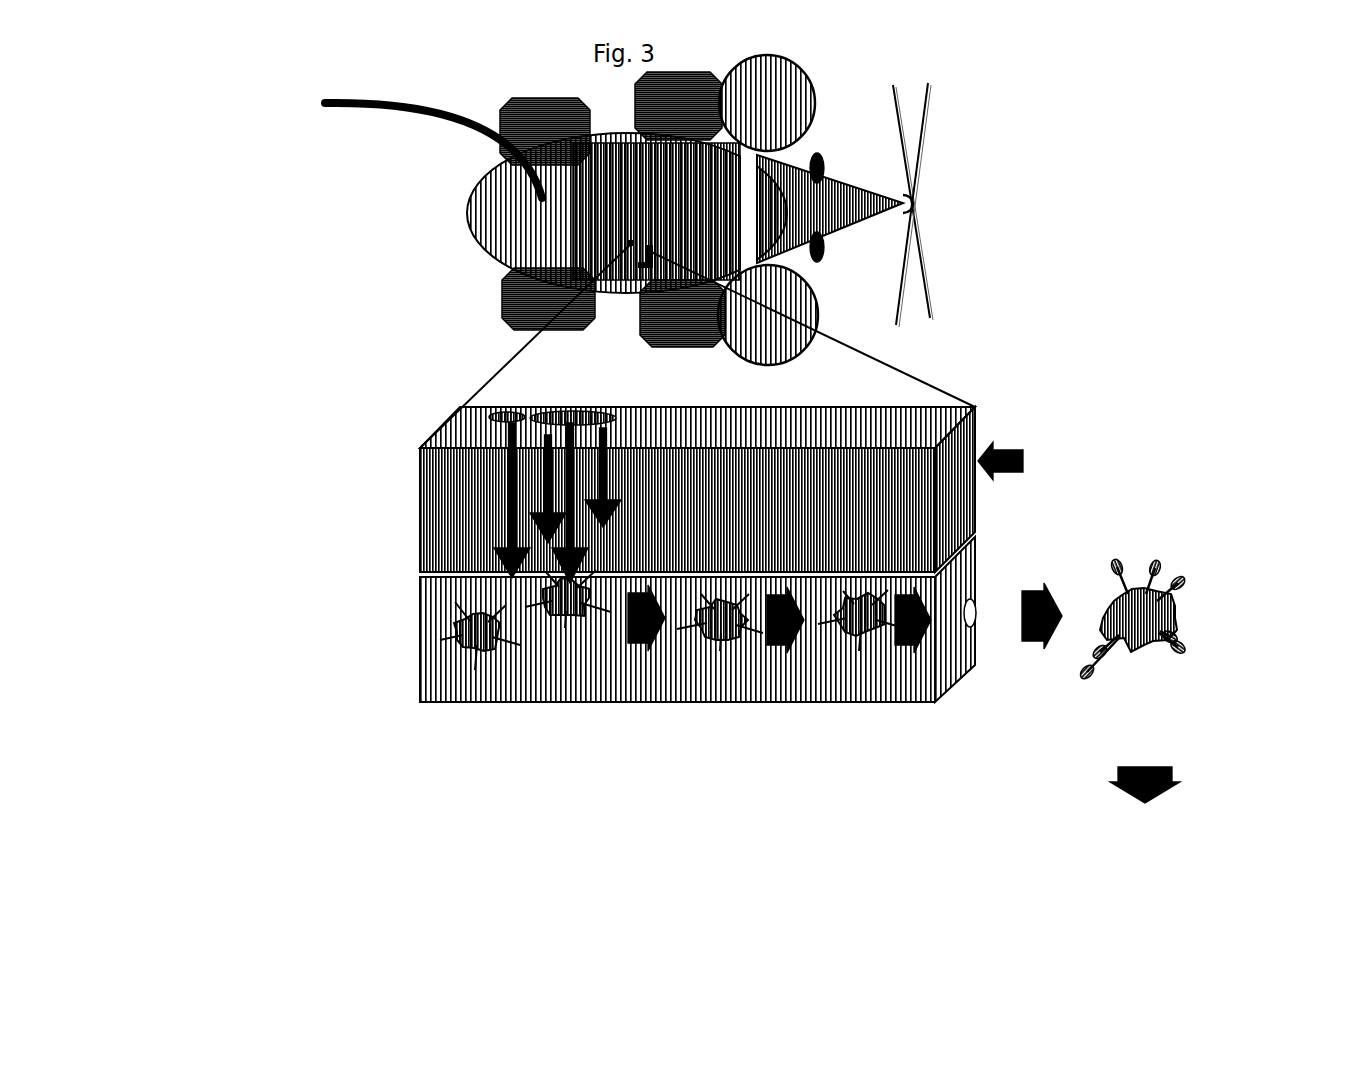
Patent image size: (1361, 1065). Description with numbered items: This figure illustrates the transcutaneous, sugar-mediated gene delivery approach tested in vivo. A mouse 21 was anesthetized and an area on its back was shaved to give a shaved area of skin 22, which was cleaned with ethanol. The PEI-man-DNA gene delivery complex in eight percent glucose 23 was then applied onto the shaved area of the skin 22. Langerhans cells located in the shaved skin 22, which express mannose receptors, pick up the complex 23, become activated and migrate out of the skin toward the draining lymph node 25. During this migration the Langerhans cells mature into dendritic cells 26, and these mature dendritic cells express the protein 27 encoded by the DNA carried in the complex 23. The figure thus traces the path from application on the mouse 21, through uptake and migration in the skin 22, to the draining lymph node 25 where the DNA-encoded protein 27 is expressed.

The mouse 21 is at (779, 210).
The shaved area of the skin 22 is at (708, 493).
The PEI-man-DNA gene delivery complex 23 is at (648, 197).
The draining lymph node 25 is at (1152, 817).
The dendritic cells 26 is at (1155, 659).
The protein encoded by the DNA 27 is at (1170, 620).